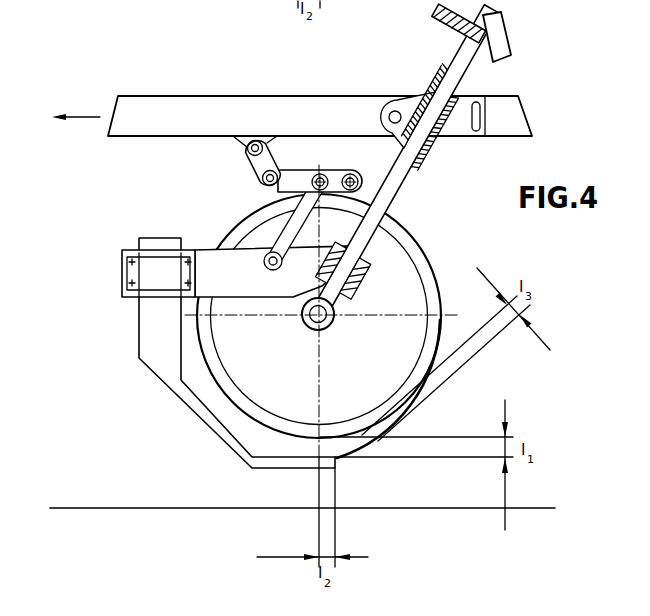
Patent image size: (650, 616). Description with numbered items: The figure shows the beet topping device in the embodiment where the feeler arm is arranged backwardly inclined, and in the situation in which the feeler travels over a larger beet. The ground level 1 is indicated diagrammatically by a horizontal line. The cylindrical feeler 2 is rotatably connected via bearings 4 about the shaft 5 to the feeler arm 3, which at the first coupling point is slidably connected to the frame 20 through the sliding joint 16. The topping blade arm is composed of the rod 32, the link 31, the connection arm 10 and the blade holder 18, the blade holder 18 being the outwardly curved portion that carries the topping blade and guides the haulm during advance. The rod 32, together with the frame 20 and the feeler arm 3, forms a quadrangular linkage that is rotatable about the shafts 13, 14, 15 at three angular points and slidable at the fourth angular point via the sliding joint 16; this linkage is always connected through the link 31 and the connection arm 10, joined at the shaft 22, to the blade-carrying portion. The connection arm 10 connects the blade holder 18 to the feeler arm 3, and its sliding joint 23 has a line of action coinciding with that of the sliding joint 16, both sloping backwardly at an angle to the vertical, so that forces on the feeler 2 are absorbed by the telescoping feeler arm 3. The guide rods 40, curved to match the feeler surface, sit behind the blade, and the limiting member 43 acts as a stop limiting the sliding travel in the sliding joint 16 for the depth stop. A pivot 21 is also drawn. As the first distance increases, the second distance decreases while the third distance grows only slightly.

The ground level 1 is at (127, 508).
The feeler 2 is at (417, 293).
The feeler arm 3 is at (398, 182).
The bearings 4 is at (309, 328).
The shaft 5 is at (323, 318).
The connection arm 10 is at (223, 267).
The shaft 13 is at (245, 152).
The shaft 14 is at (258, 182).
The shaft 15 is at (350, 174).
The sliding joint 16 is at (413, 110).
The blade holder 18 is at (190, 405).
The frame 20 is at (194, 104).
The pivot pin 21 is at (322, 174).
The shaft 22 is at (273, 270).
The sliding joint 23 is at (362, 273).
The link 31 is at (293, 228).
The rod 32 is at (295, 175).
The guide rods 40 is at (377, 445).
The limiting member 43 is at (504, 33).